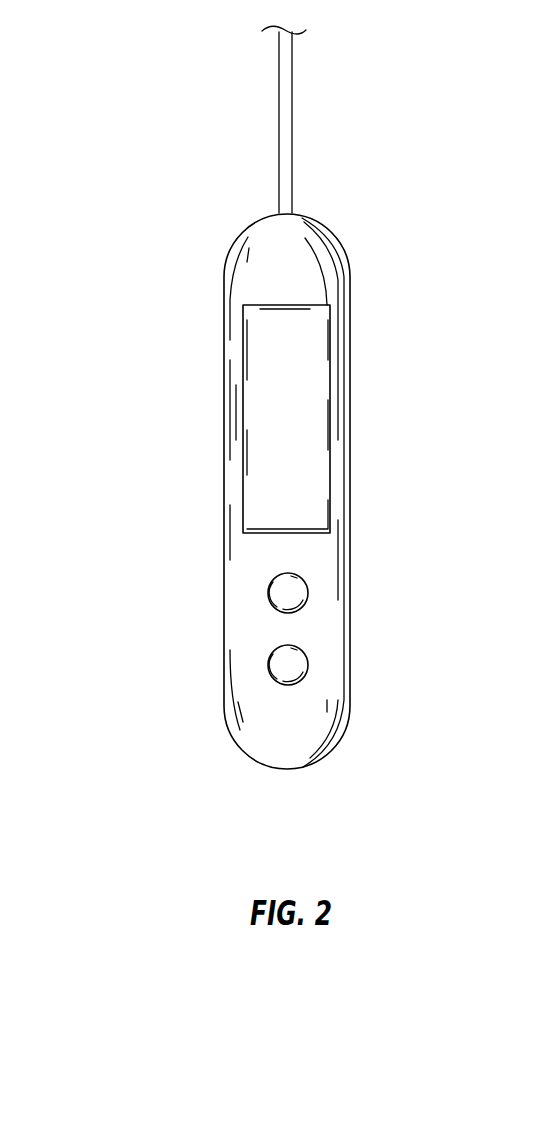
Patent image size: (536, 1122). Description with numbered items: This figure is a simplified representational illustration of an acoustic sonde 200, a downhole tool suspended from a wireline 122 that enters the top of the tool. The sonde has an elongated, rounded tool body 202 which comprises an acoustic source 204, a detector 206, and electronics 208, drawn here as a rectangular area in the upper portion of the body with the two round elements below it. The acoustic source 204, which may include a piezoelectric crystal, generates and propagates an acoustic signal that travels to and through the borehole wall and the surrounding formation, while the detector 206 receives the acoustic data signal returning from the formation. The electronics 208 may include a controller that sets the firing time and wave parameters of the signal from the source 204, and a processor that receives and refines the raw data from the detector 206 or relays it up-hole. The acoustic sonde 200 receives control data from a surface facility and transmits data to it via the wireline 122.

The acoustic sonde 200 is at (145, 46).
The wireline 122 is at (292, 138).
The tool body 202 is at (337, 283).
The acoustic source 204 is at (288, 593).
The detector 206 is at (288, 665).
The electronics 208 is at (300, 402).